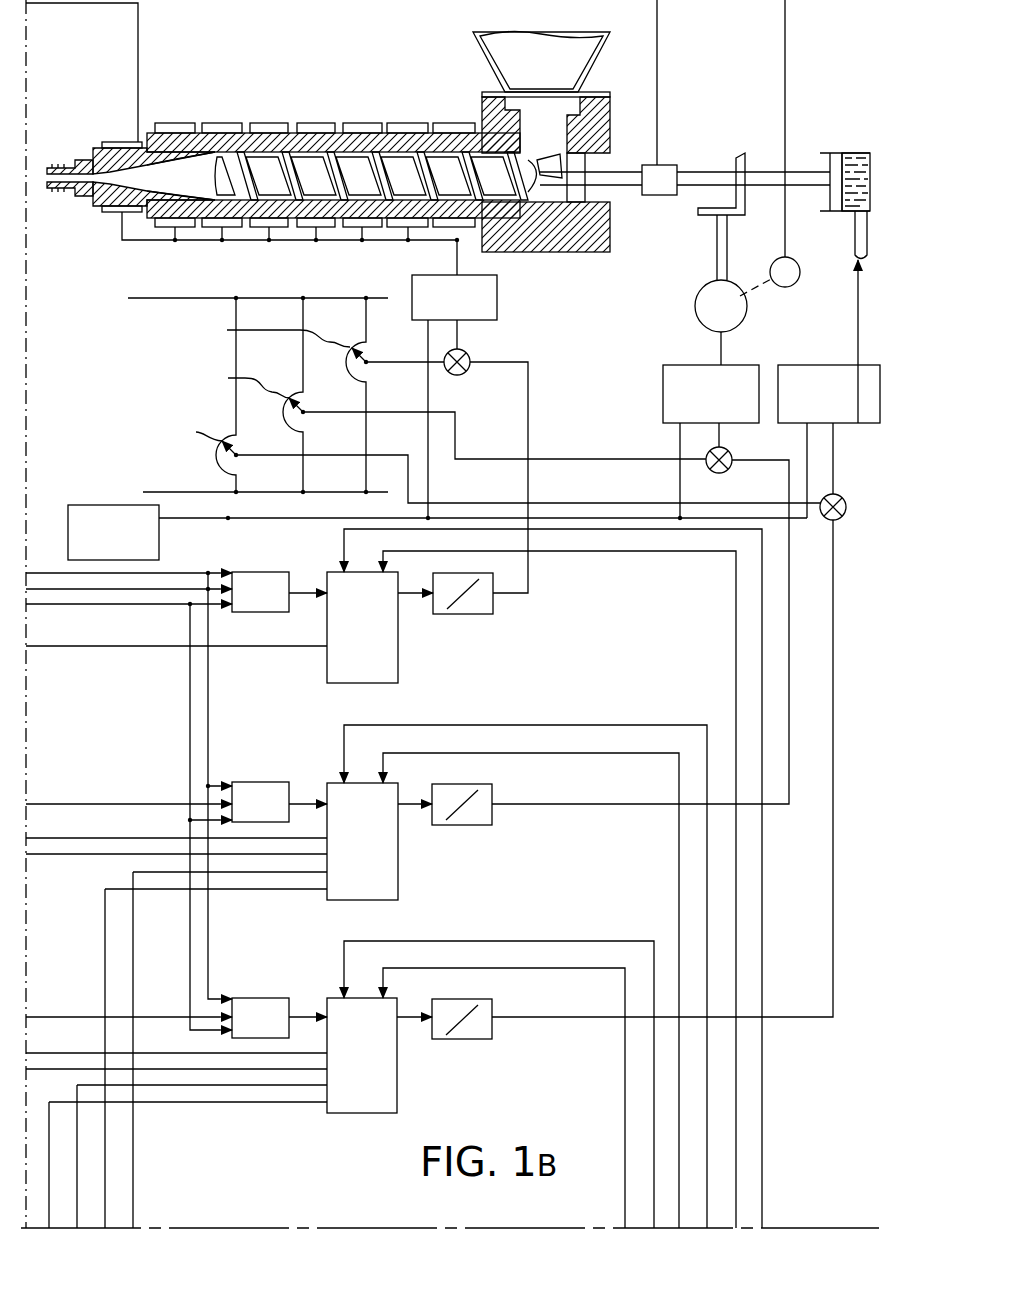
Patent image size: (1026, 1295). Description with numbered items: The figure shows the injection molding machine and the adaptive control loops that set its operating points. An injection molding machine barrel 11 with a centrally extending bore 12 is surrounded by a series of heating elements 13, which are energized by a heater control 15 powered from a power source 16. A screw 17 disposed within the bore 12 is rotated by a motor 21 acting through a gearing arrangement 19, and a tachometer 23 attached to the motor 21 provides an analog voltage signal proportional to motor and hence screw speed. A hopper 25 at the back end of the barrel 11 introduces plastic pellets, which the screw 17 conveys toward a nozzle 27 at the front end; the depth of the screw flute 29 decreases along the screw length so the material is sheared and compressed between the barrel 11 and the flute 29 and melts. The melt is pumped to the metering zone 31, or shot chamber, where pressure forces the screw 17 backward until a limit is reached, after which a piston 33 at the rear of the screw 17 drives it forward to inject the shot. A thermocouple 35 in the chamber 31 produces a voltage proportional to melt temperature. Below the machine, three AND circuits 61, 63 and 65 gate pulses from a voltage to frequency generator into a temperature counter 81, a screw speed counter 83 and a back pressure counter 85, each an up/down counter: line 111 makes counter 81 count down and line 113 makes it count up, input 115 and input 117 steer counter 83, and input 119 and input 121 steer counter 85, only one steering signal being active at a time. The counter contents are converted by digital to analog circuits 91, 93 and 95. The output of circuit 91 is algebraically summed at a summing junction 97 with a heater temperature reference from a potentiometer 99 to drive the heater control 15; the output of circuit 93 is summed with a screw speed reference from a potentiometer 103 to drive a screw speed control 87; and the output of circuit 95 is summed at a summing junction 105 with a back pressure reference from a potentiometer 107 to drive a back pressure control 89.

The barrel 11 is at (398, 133).
The bore 12 is at (398, 152).
The heating elements 13 is at (135, 140).
The heater control 15 is at (500, 296).
The power source 16 is at (88, 505).
The screw 17 is at (216, 176).
The gearing arrangement 19 is at (748, 153).
The motor 21 is at (705, 290).
The tachometer 23 is at (773, 262).
The hopper 25 is at (555, 80).
The nozzle 27 is at (78, 160).
The screw flute 29 is at (472, 152).
The metering zone 31 is at (133, 192).
The piston 33 is at (852, 153).
The thermocouple 35 is at (140, 165).
The AND circuit 61 is at (264, 570).
The AND circuit 63 is at (260, 782).
The AND circuit 65 is at (260, 998).
The temperature counter 81 is at (400, 650).
The screw speed counter 83 is at (405, 875).
The back pressure counter 85 is at (405, 1085).
The screw speed control 87 is at (668, 365).
The back pressure control 89 is at (825, 365).
The digital to analog circuit 91 is at (494, 614).
The digital to analog circuit 93 is at (495, 784).
The digital to analog circuit 95 is at (495, 1002).
The summing junction 97 is at (468, 352).
The potentiometer 99 is at (364, 374).
The potentiometer 103 is at (303, 427).
The summing junction 105 is at (843, 500).
The potentiometer 107 is at (236, 469).
The line 111 is at (335, 550).
The input line 113 is at (386, 566).
The input 115 is at (330, 740).
The input 117 is at (413, 750).
The input 119 is at (402, 941).
The input 121 is at (490, 968).